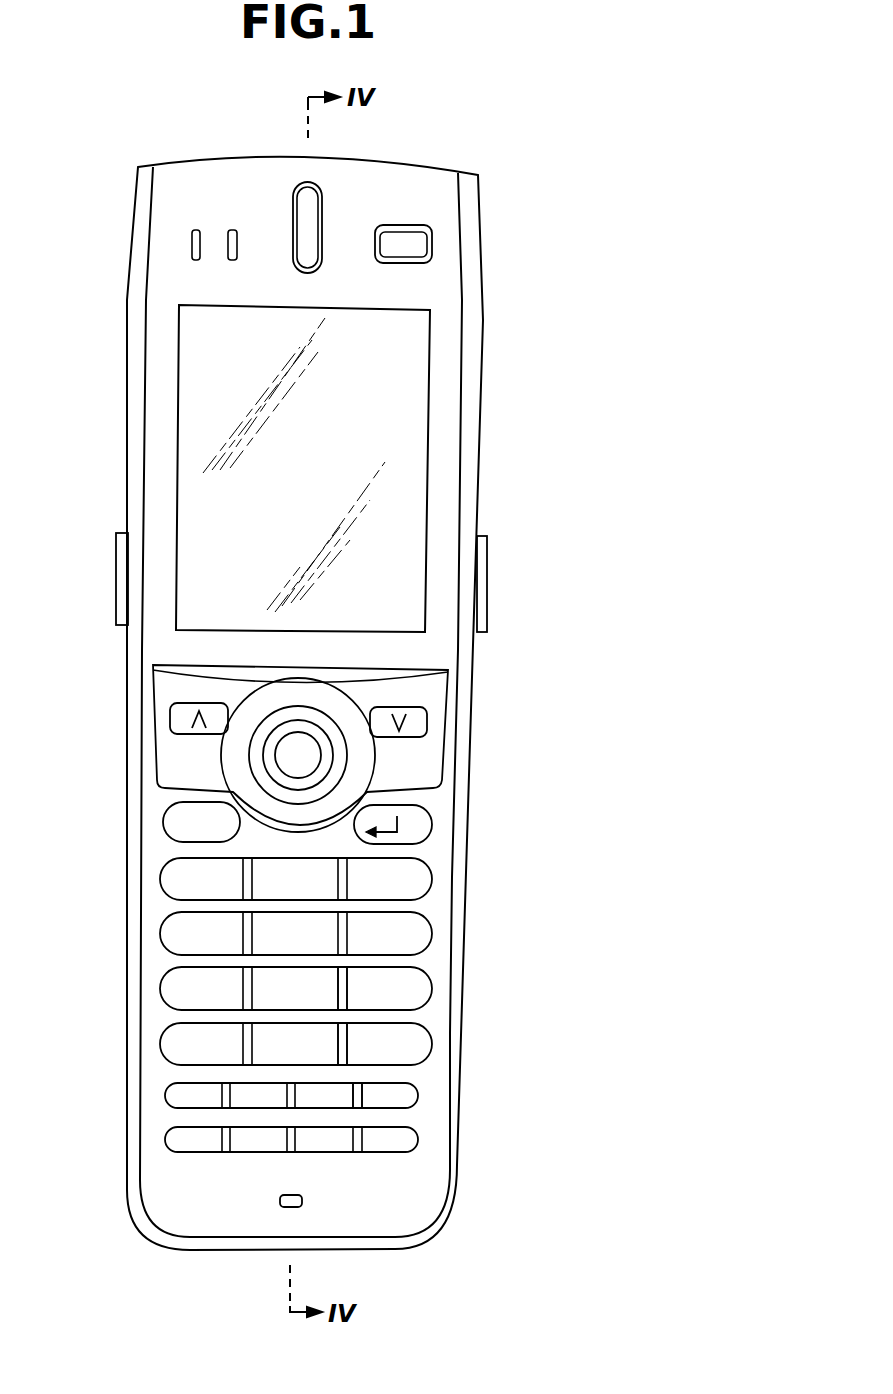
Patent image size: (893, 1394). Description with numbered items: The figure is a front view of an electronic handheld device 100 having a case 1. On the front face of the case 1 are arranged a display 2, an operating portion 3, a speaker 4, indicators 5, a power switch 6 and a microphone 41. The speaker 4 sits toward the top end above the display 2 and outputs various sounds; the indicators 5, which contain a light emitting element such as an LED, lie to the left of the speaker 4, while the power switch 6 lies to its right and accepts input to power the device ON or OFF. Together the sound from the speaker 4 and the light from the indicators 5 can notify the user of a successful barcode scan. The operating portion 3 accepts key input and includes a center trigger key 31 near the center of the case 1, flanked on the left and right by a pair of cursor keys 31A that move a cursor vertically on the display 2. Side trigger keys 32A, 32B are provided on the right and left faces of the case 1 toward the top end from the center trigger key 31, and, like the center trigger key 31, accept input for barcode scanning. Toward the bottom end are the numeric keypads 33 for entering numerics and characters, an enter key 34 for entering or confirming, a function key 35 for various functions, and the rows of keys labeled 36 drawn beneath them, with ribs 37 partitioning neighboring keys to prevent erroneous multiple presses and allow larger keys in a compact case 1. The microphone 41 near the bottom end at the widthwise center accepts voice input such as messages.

The electronic handheld device 100 is at (466, 124).
The case 1 is at (478, 194).
The display 2 is at (417, 388).
The operating portion 3 is at (535, 527).
The speaker 4 is at (302, 222).
The indicators 5 is at (228, 245).
The power switch 6 is at (418, 243).
The center trigger key 31 is at (288, 756).
The cursor keys 31A is at (373, 707).
The side trigger key 32A is at (484, 537).
The side trigger key 32B is at (118, 533).
The numeric keypads 33 is at (165, 825).
The enter key 34 is at (418, 820).
The function key 35 is at (160, 1043).
The function keys 36 is at (167, 1093).
The ribs 37 is at (340, 1010).
The microphone 41 is at (287, 1207).